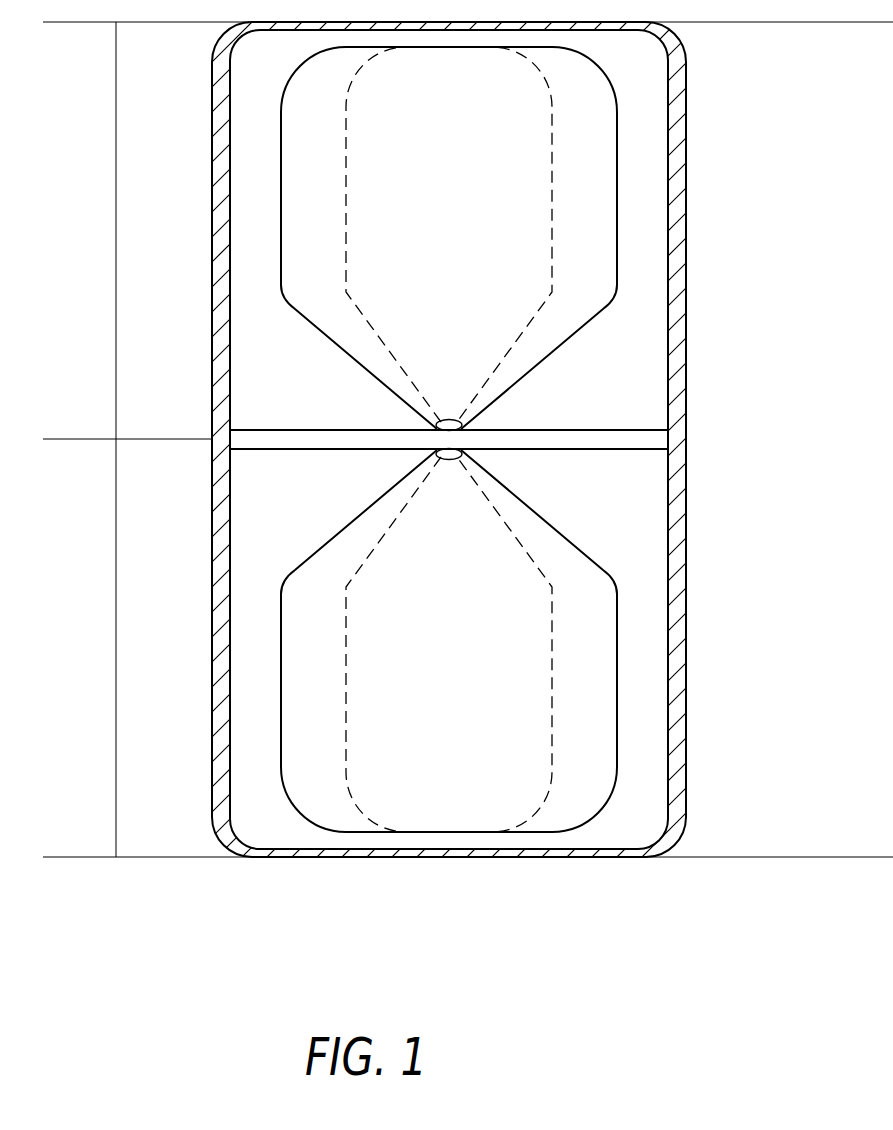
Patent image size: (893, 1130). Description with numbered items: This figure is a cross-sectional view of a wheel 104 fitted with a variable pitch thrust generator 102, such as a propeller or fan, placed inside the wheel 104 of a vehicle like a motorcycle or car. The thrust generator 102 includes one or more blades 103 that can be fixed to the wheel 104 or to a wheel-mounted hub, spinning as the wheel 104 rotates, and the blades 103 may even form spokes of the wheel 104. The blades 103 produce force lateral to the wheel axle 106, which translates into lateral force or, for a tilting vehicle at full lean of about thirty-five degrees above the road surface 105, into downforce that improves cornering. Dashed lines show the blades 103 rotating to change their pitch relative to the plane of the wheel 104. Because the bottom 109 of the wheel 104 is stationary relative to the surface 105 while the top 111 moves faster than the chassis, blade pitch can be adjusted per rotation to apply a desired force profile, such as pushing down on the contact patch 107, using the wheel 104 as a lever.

The thrust generator 102 is at (617, 352).
The blade 103 is at (463, 220).
The wheel 104 is at (222, 307).
The road surface 105 is at (68, 857).
The wheel axle 106 is at (587, 438).
The contact patch 107 is at (300, 857).
The bottom of the wheel 109 is at (116, 628).
The top of the wheel 111 is at (116, 214).